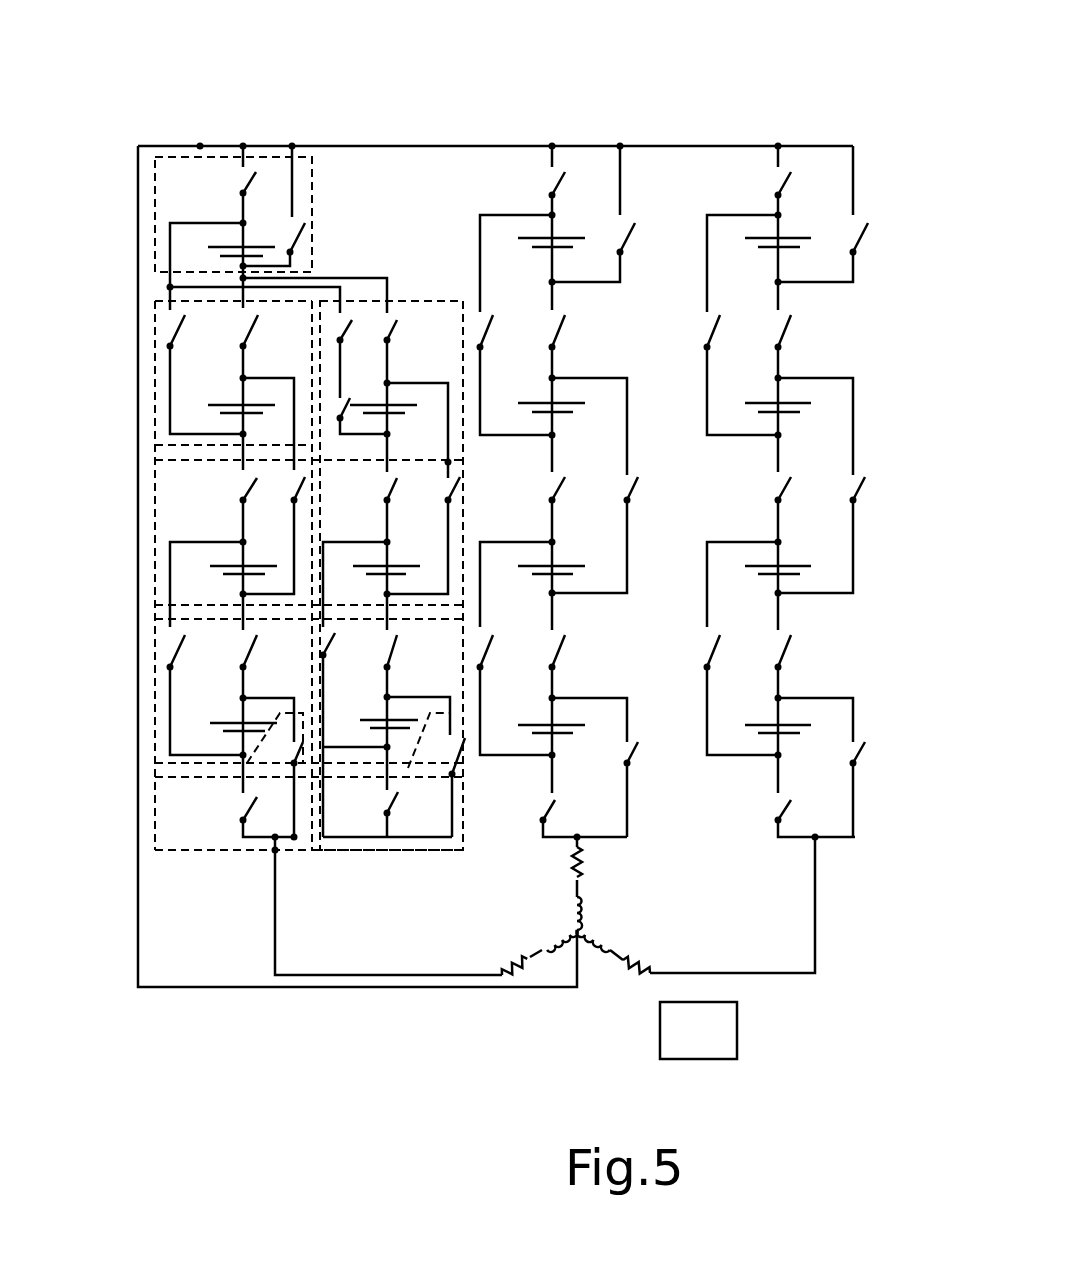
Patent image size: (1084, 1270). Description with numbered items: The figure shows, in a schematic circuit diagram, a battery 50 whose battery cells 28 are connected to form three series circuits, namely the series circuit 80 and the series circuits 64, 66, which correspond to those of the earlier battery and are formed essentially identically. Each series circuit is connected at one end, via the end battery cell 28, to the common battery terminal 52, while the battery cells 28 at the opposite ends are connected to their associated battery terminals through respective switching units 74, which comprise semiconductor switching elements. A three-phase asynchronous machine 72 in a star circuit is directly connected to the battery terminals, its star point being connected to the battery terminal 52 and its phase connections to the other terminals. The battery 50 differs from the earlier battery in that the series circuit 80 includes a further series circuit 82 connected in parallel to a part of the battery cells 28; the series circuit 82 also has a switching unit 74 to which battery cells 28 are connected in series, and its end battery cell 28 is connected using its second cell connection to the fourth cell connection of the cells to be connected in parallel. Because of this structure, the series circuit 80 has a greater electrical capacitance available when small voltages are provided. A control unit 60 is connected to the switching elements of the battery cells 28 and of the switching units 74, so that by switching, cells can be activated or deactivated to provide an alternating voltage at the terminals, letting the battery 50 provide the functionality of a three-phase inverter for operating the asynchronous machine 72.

The battery cell 28 is at (155, 206).
The battery 50 is at (427, 110).
The battery terminal 52 is at (200, 146).
The control unit 60 is at (737, 1040).
The series circuit 64 is at (517, 868).
The series circuit 66 is at (883, 467).
The three-phase asynchronous machine 72 is at (593, 965).
The switching unit 74 is at (155, 826).
The series circuit 80 is at (190, 893).
The further series circuit 82 is at (368, 272).